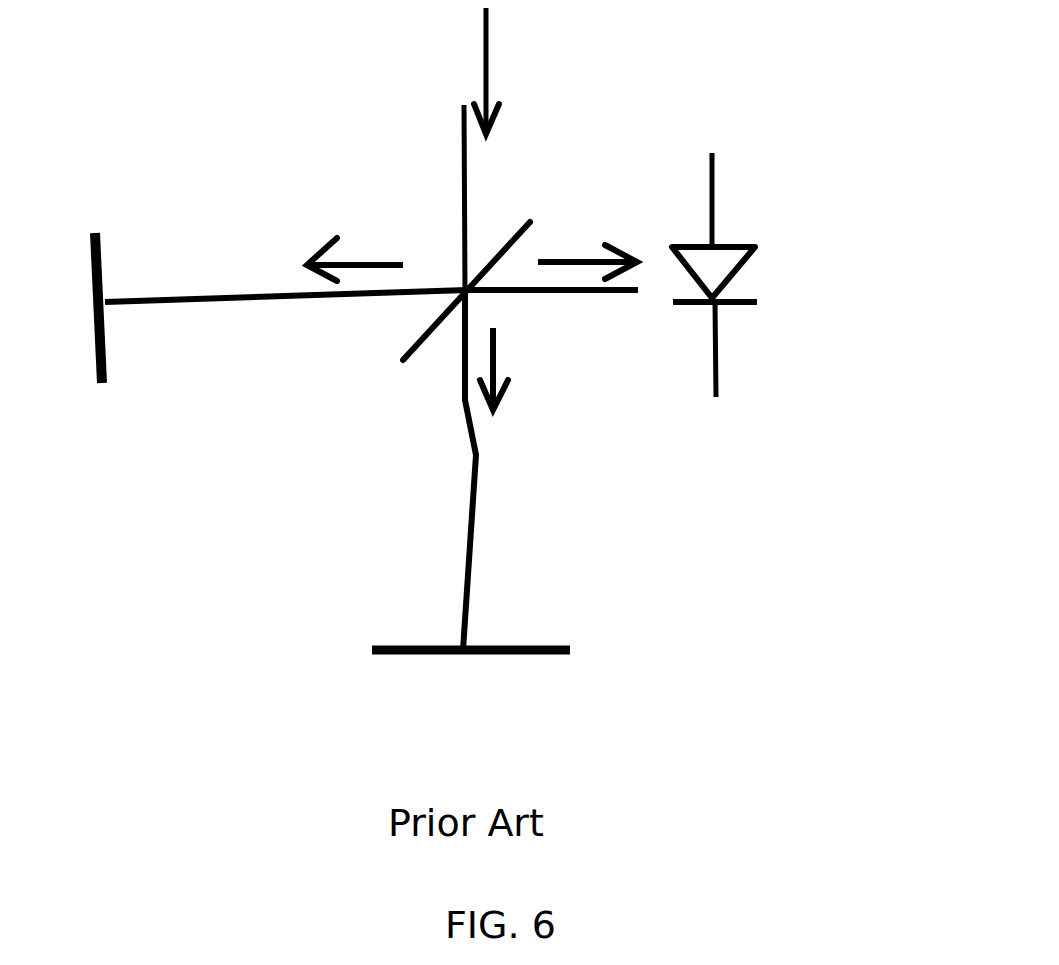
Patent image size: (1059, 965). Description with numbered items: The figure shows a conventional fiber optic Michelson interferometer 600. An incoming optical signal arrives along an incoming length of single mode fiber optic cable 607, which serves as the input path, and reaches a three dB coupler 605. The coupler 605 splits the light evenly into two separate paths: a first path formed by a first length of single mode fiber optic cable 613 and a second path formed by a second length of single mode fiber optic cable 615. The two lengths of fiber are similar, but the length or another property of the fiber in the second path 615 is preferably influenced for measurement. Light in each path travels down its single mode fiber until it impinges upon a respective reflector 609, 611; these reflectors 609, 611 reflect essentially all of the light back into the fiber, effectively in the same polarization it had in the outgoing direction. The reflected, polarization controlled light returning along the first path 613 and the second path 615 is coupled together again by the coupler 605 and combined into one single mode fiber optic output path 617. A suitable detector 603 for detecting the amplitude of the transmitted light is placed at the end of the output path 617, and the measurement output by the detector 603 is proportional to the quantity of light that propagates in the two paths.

The fiber optic Michelson interferometer 600 is at (478, 359).
The detector 603 is at (772, 268).
The 3 dB coupler 605 is at (503, 237).
The incoming length of single mode fiber optic cable 607 is at (468, 181).
The reflector 609 is at (93, 353).
The reflector 611 is at (448, 657).
The first length of single mode fiber optic cable 613 is at (371, 297).
The second length of single mode fiber optic cable 615 is at (470, 320).
The single mode fiber optic path 617 is at (565, 295).